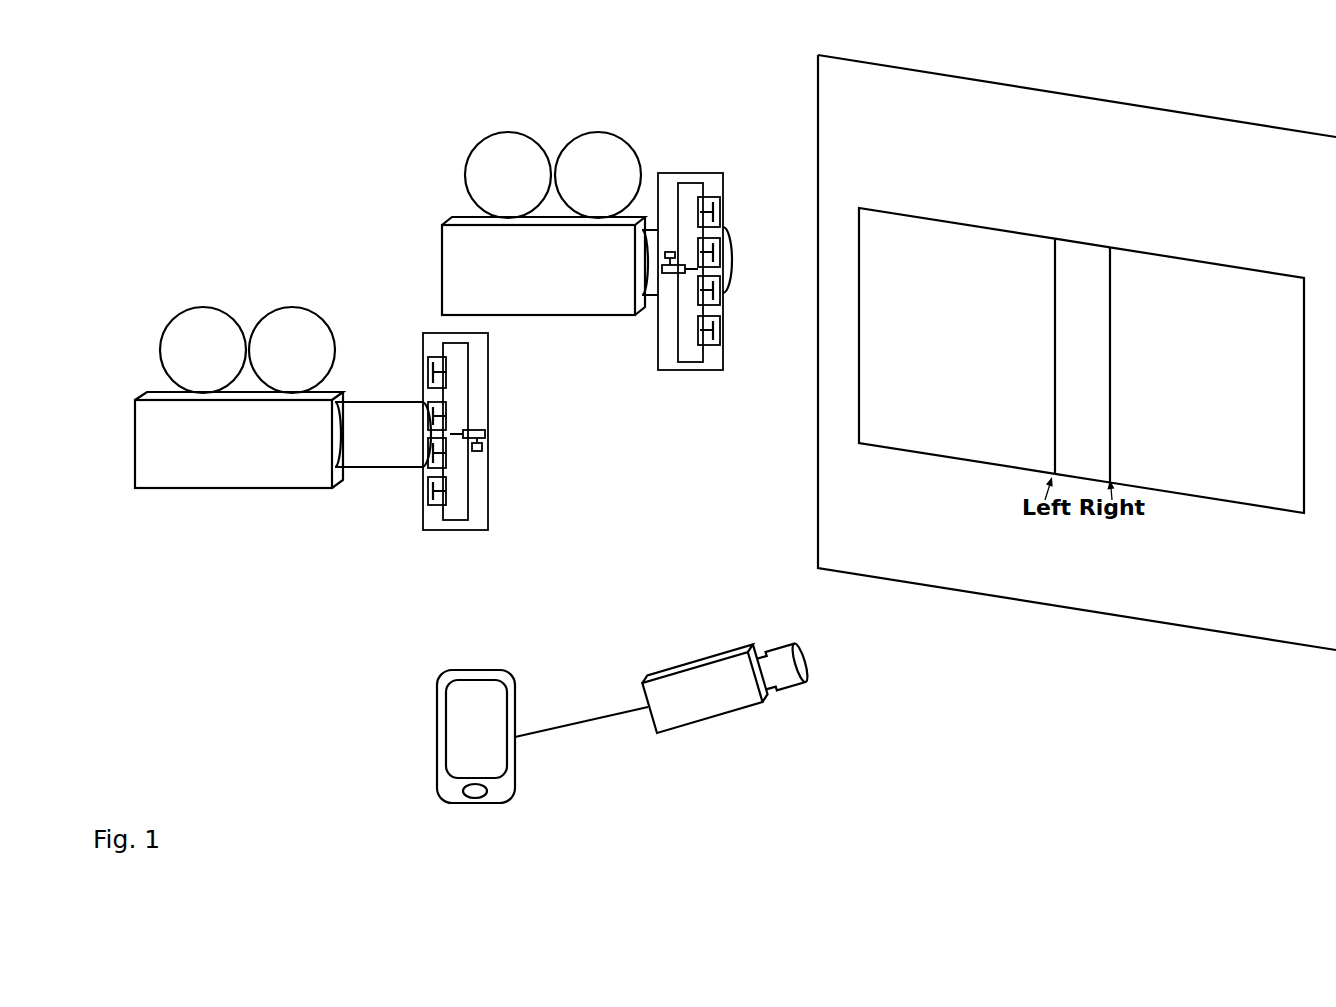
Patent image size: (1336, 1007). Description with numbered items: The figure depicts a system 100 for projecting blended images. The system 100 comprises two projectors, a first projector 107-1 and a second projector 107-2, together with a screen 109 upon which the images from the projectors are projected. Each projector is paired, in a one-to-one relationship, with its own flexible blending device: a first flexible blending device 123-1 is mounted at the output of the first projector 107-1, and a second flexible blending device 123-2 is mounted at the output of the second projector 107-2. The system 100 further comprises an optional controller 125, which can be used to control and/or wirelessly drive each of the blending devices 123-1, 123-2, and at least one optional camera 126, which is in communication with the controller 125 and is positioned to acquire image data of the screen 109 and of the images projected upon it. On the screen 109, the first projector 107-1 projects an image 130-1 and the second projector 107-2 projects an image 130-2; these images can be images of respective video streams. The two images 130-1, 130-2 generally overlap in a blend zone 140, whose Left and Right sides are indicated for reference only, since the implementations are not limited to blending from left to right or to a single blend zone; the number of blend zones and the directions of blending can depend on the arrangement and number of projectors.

The system 100 is at (278, 759).
The first projector 107-1 is at (566, 282).
The second projector 107-2 is at (261, 456).
The screen 109 is at (881, 111).
The flexible blending device 123-1 is at (670, 371).
The flexible blending device 123-2 is at (460, 531).
The controller 125 is at (496, 742).
The camera 126 is at (727, 682).
The image 130-1 is at (932, 257).
The image 130-2 is at (1187, 291).
The blend zone 140 is at (1076, 259).